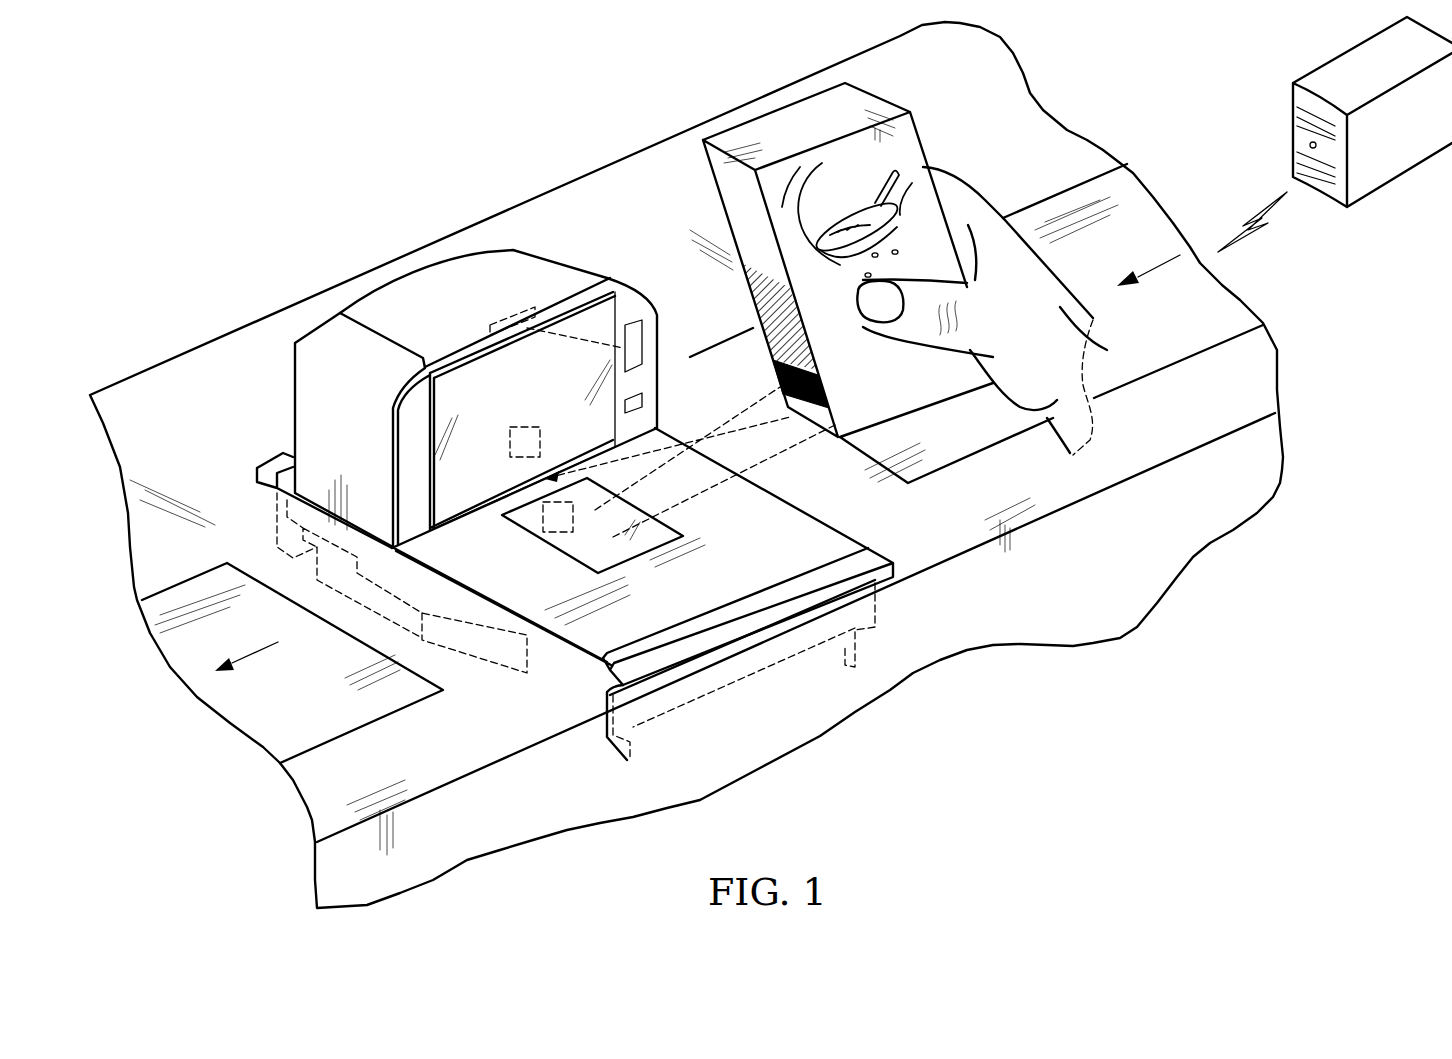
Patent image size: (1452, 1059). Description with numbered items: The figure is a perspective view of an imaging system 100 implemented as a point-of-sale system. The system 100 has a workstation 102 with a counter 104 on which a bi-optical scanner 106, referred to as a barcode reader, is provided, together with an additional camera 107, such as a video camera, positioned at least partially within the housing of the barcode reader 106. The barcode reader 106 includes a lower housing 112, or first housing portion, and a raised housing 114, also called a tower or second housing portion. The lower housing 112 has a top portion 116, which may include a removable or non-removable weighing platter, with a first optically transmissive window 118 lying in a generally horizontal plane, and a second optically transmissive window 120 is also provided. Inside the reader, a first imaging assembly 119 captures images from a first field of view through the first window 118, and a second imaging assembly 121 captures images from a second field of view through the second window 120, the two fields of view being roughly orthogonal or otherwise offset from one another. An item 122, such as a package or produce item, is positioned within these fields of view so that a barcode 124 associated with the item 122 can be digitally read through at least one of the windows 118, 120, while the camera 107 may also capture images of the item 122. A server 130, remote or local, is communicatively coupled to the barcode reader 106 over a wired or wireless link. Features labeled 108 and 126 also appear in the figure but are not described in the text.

The imaging system 100 is at (195, 298).
The workstation 102 is at (582, 168).
The counter 104 is at (1006, 99).
The bi-optical scanner 106 is at (303, 430).
The additional camera 107 is at (497, 322).
The conveyor belt 108 is at (1058, 306).
The lower housing 112 is at (598, 748).
The raised housing 114 is at (438, 388).
The top portion 116 is at (642, 582).
The first optically transmissive window 118 is at (637, 548).
The first imaging assembly 119 is at (545, 545).
The second optically transmissive window 120 is at (448, 358).
The second imaging assembly 121 is at (525, 425).
The item 122 is at (850, 260).
The barcode 124 is at (827, 397).
The item label 126 is at (757, 300).
The server 130 is at (1293, 130).